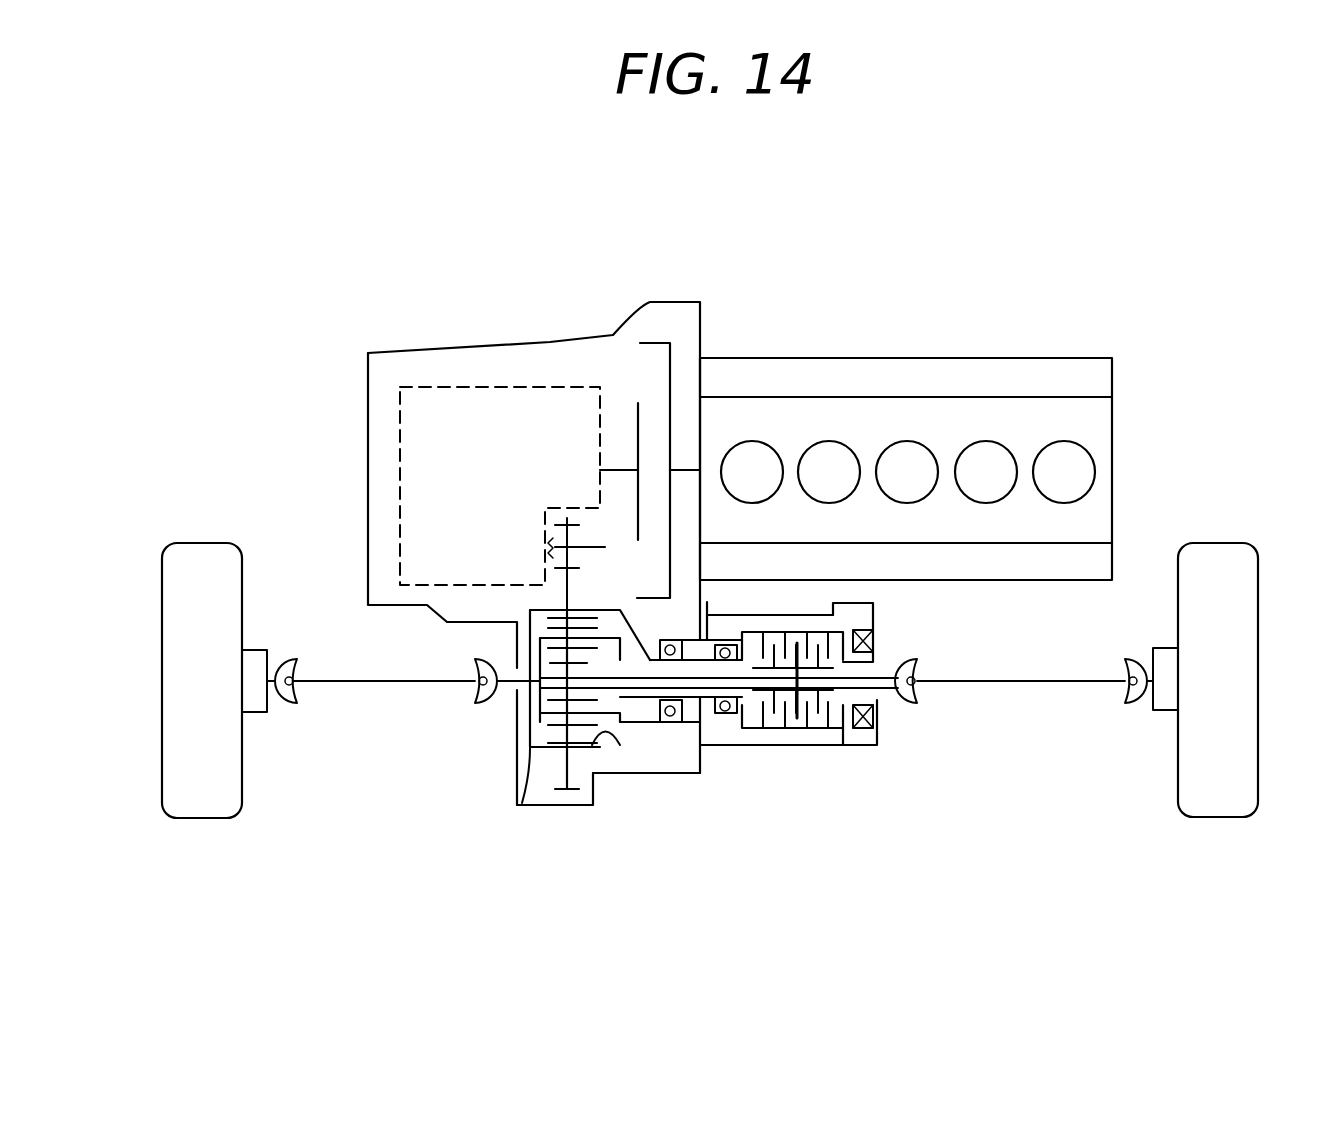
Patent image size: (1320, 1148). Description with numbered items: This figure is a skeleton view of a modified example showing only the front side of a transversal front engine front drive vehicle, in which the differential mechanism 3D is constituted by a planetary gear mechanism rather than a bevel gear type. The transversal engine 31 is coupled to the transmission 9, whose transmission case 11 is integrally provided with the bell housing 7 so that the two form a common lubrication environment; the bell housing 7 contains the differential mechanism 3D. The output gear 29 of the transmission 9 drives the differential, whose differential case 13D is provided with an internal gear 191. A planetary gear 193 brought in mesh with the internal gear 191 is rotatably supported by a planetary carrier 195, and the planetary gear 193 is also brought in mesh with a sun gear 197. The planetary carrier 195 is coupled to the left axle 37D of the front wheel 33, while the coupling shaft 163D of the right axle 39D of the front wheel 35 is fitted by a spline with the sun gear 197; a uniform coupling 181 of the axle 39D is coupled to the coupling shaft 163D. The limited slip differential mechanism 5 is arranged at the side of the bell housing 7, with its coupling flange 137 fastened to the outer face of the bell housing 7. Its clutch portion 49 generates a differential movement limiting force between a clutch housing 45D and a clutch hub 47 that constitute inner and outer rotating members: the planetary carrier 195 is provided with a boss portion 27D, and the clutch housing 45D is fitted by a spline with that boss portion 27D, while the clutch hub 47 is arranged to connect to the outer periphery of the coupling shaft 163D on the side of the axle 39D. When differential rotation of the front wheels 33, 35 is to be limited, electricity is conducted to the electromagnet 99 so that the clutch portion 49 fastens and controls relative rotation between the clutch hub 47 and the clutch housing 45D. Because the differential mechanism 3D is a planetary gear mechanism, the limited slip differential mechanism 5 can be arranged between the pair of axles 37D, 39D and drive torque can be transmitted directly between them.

The differential mechanism 3D is at (613, 772).
The limited slip differential mechanism 5 is at (785, 743).
The bell housing 7 is at (513, 757).
The transmission 9 is at (560, 328).
The transmission case 11 is at (443, 343).
The differential case 13D is at (517, 805).
The boss portion 27D is at (682, 637).
The output gear 29 is at (567, 518).
The transversal engine 31 is at (920, 350).
The front wheel 33 is at (199, 543).
The front wheel 35 is at (1212, 543).
The axle 37D is at (378, 695).
The axle 39D is at (962, 690).
The clutch housing 45D is at (813, 745).
The clutch hub 47 is at (805, 768).
The clutch portion 49 is at (845, 737).
The electromagnet 99 is at (870, 737).
The coupling flange 137 is at (712, 606).
The coupling shaft 163D is at (880, 710).
The uniform coupling 181 is at (913, 658).
The internal gear 191 is at (622, 707).
The planetary gear 193 is at (546, 760).
The planetary carrier 195 is at (640, 705).
The sun gear 197 is at (555, 645).